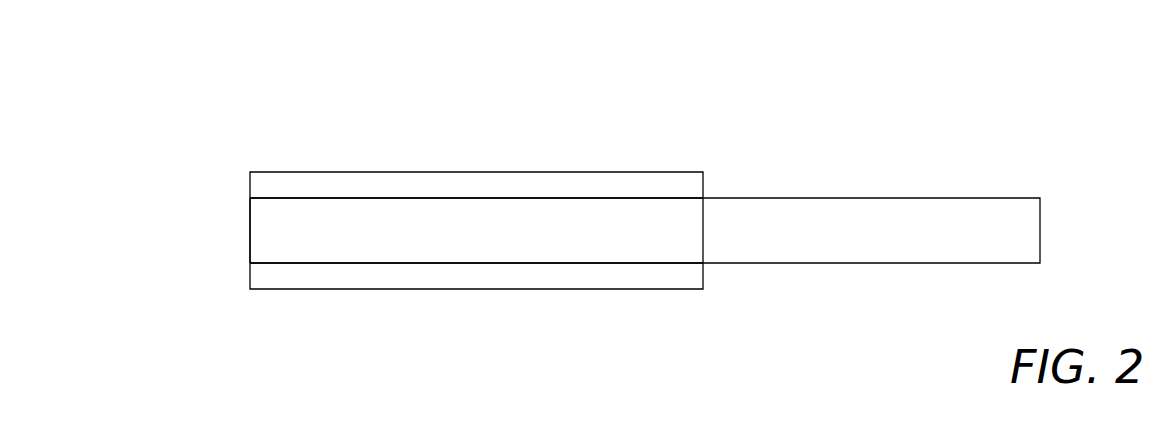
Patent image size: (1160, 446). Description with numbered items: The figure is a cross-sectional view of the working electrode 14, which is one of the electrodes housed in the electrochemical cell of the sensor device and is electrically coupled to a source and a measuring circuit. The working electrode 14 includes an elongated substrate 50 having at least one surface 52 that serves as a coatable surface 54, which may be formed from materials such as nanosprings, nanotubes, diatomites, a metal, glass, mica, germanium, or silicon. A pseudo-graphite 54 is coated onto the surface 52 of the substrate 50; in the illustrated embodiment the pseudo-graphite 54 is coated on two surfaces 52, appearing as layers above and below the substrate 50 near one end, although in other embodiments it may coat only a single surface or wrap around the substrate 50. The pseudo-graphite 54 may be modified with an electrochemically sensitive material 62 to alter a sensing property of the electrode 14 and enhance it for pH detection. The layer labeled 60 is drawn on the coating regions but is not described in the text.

The working electrode 14 is at (177, 148).
The substrate 50 is at (846, 246).
The surface 52 is at (260, 243).
The pseudo-graphite 54 is at (303, 197).
The outer sleeve first layer portion 60 is at (368, 188).
The electrochemically sensitive material 62 is at (558, 187).